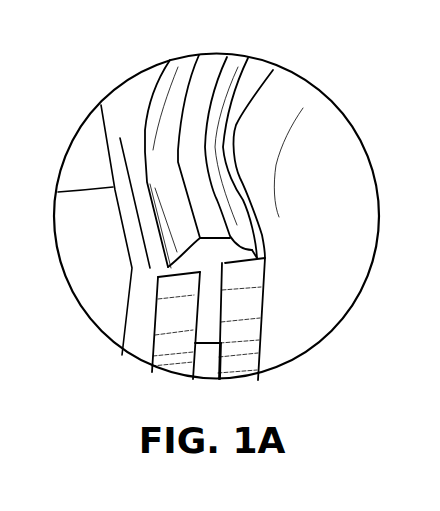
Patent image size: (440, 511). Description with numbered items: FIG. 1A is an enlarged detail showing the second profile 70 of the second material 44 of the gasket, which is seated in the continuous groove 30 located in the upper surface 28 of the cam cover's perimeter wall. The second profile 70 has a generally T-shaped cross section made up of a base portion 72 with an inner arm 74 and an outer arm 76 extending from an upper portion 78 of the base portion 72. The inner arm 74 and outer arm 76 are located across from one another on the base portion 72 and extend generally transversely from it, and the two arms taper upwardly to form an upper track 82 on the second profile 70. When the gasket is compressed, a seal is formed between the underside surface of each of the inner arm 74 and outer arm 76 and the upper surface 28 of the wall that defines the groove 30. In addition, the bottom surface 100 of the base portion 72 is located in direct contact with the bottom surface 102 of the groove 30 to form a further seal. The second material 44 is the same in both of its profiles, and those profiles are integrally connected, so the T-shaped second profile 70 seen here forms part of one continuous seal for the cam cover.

The upper surface 28 is at (135, 103).
The outer arm 76 is at (147, 165).
The second material 44 is at (180, 224).
The upper track 82 is at (193, 140).
The inner arm 74 is at (237, 232).
The second profile 70 is at (147, 265).
The groove 30 is at (255, 382).
The upper portion 78 is at (210, 291).
The base portion 72 is at (212, 327).
The bottom surface 100 is at (183, 381).
The bottom surface 102 is at (250, 380).